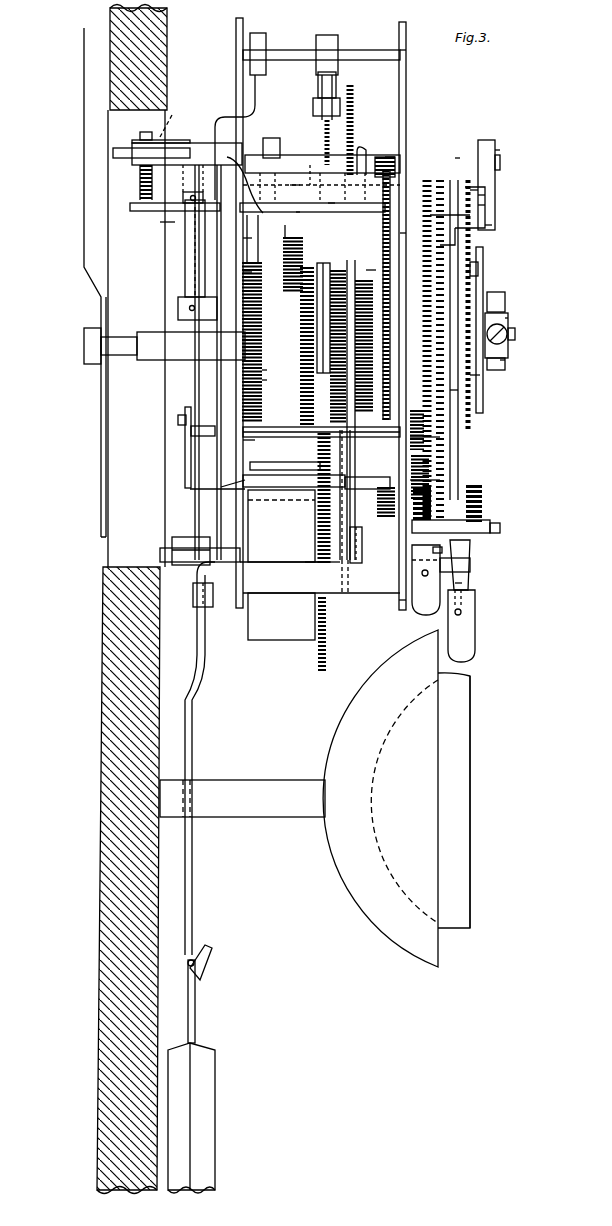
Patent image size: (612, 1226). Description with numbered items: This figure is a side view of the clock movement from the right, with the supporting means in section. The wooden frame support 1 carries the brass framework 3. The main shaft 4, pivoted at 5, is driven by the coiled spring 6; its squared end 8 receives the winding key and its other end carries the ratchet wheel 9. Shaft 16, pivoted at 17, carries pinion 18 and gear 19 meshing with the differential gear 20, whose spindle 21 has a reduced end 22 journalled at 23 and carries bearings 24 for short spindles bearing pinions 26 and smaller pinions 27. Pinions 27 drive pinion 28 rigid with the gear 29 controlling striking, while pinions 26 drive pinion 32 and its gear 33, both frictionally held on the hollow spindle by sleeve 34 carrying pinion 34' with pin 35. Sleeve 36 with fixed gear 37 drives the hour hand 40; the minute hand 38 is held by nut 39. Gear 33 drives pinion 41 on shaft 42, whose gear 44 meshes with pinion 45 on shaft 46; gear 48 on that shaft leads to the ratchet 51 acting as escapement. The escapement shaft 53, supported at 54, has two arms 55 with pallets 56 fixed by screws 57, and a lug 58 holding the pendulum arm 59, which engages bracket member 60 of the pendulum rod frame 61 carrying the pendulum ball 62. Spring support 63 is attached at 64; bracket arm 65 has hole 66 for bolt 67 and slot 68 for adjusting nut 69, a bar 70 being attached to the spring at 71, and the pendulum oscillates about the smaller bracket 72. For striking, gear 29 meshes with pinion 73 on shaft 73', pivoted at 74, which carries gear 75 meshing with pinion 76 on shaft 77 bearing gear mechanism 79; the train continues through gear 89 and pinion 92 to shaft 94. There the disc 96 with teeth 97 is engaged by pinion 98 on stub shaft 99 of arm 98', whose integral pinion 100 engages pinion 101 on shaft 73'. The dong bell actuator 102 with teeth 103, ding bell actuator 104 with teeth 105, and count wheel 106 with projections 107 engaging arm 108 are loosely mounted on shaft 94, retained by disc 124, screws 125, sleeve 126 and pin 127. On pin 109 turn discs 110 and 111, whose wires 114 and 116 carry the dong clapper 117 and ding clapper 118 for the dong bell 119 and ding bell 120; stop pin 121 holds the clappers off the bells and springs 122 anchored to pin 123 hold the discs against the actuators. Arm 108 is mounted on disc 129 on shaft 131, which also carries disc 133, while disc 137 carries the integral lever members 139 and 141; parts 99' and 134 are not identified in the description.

The wooden frame support 1 is at (167, 14).
The brass framework 3 is at (406, 72).
The main shaft 4 is at (240, 556).
The pivot 5 is at (350, 563).
The spring 6 is at (293, 625).
The squared end 8 is at (172, 548).
The ratchet wheel 9 is at (312, 562).
The shaft 16 is at (280, 487).
The pivot points 17 is at (221, 487).
The small pinion 18 is at (318, 495).
The gear 19 is at (318, 448).
The differential gear 20 is at (345, 272).
The main spindle 21 is at (375, 395).
The reduced end 22 is at (455, 390).
The journal 23 is at (480, 375).
The bearings 24 is at (325, 275).
The pinion 26 is at (296, 268).
The pinion 27 is at (368, 280).
The pinion 28 is at (392, 320).
The gear 29 is at (392, 297).
The pinion 32 is at (264, 385).
The gear 33 is at (267, 437).
The sleeve 34 is at (217, 297).
The pinion 34' is at (217, 342).
The pin 35 is at (262, 362).
The sleeve 36 is at (155, 360).
The gear 37 is at (210, 425).
The minute hand 38 is at (84, 30).
The nut 39 is at (276, 377).
The hour hand 40 is at (101, 445).
The pinion 41 is at (285, 237).
The shaft 42 is at (438, 183).
The gear 44 is at (400, 233).
The pinion 45 is at (385, 157).
The shaft 46 is at (303, 191).
The gear 48 is at (354, 115).
The ratchet 51 is at (325, 134).
The escapement shaft 53 is at (292, 50).
The support points 54 is at (406, 53).
The arms 55 is at (322, 36).
The pallets 56 is at (318, 82).
The screws 57 is at (313, 103).
The lug 58 is at (258, 34).
The pendulum arm 59 is at (215, 117).
The bracket member 60 is at (185, 440).
The pendulum rod frame 61 is at (190, 489).
The pendulum ball 62 is at (208, 1060).
The spring support 63 is at (185, 270).
The attachment point 64 is at (178, 310).
The bracket arm 65 is at (140, 172).
The hole 66 is at (172, 116).
The bolt 67 is at (140, 192).
The slot 68 is at (195, 145).
The adjusting nut 69 is at (130, 148).
The bar 70 is at (140, 211).
The attachment 71 is at (200, 178).
The smaller bracket 72 is at (160, 222).
The pinion 73 is at (367, 472).
The shaft 73' is at (225, 452).
The pivot points 74 is at (362, 535).
The gear 75 is at (340, 565).
The pinion 76 is at (380, 517).
The shaft 77 is at (247, 515).
The gear mechanism 79 is at (340, 560).
The gear 89 is at (252, 238).
The pinion 92 is at (245, 272).
The shaft 94 is at (505, 312).
The disc 96 is at (470, 215).
The teeth 97 is at (440, 248).
The pinion 98 is at (467, 477).
The arm 98' is at (487, 350).
The stub shaft 99 is at (102, 358).
The gear 99' is at (480, 434).
The pinion 100 is at (440, 480).
The pinion 101 is at (440, 437).
The dong bell actuator 102 is at (455, 158).
The dong bell teeth 103 is at (509, 145).
The ding bell actuator 104 is at (470, 186).
The teeth 105 is at (470, 190).
The count wheel 106 is at (478, 195).
The projections 107 is at (478, 205).
The arm 108 is at (492, 225).
The pin 109 is at (442, 548).
The disc 110 is at (417, 530).
The outer disc 111 is at (483, 505).
The wire 114 is at (470, 567).
The wire 116 is at (470, 578).
The dong clapper 117 is at (400, 612).
The ding clapper 118 is at (477, 637).
The dong bell 119 is at (445, 700).
The ding bell 120 is at (472, 740).
The stop pin 121 is at (462, 583).
The spring 122 is at (432, 495).
The pin 123 is at (500, 528).
The disc 124 is at (483, 287).
The screws 125 is at (505, 362).
The sleeve 126 is at (508, 318).
The pin 127 is at (478, 275).
The disc 129 is at (495, 150).
The shaft 131 is at (310, 162).
The second disc 133 is at (270, 138).
The plate 134 is at (335, 198).
The disc 137 is at (357, 150).
The lever member 139 is at (307, 205).
The lever member 141 is at (233, 181).